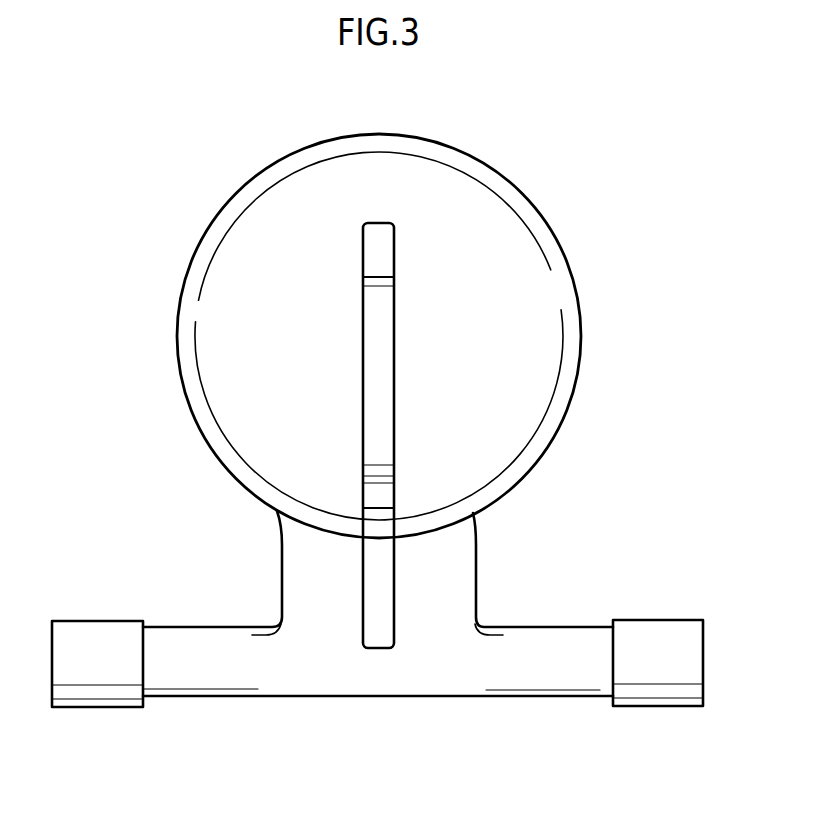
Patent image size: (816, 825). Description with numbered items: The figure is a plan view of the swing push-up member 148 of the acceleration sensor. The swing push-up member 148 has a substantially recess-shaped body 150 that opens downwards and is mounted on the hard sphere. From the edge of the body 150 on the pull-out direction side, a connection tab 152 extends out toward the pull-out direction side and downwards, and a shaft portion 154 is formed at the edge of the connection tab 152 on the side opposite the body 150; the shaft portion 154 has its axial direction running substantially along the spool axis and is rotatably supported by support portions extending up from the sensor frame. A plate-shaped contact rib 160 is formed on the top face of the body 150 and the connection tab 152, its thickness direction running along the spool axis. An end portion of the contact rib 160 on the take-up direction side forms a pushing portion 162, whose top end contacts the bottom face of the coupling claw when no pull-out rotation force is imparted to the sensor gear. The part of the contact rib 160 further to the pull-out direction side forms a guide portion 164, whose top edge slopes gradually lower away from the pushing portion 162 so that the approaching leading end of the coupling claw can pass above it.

The swing push-up member 148 is at (593, 312).
The body 150 is at (472, 203).
The connection tab 152 is at (455, 580).
The shaft portion 154 is at (108, 637).
The contact rib 160 is at (394, 319).
The pushing portion 162 is at (380, 257).
The guide portion 164 is at (381, 420).